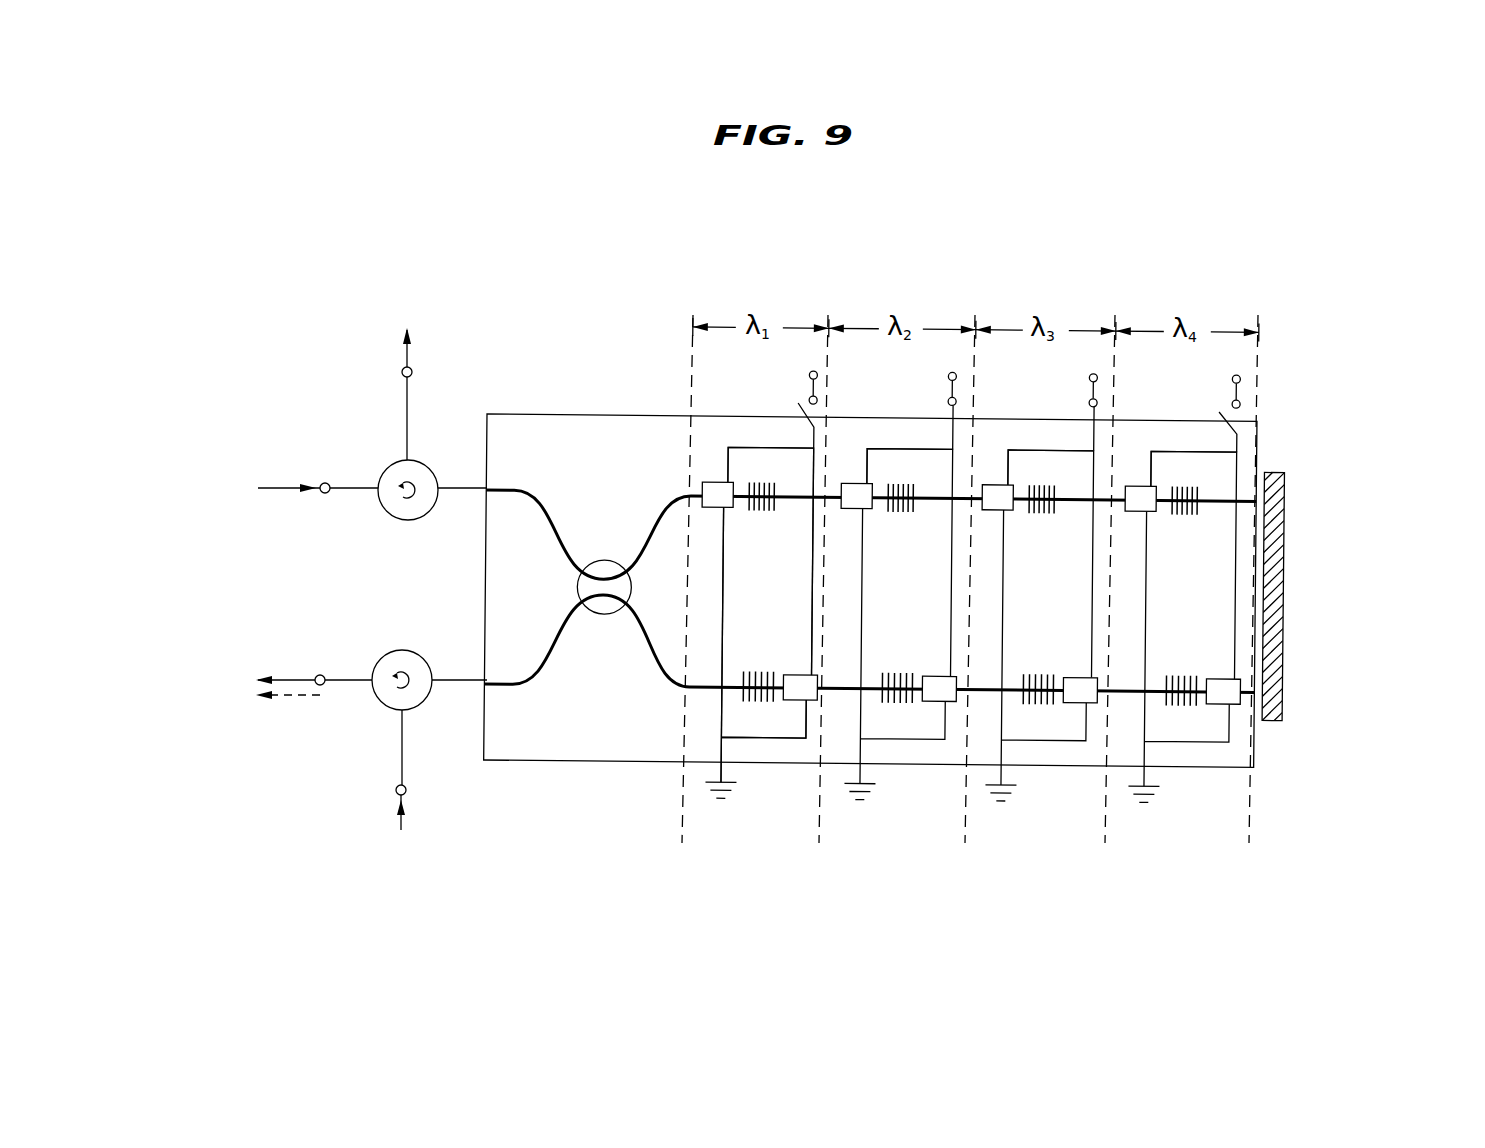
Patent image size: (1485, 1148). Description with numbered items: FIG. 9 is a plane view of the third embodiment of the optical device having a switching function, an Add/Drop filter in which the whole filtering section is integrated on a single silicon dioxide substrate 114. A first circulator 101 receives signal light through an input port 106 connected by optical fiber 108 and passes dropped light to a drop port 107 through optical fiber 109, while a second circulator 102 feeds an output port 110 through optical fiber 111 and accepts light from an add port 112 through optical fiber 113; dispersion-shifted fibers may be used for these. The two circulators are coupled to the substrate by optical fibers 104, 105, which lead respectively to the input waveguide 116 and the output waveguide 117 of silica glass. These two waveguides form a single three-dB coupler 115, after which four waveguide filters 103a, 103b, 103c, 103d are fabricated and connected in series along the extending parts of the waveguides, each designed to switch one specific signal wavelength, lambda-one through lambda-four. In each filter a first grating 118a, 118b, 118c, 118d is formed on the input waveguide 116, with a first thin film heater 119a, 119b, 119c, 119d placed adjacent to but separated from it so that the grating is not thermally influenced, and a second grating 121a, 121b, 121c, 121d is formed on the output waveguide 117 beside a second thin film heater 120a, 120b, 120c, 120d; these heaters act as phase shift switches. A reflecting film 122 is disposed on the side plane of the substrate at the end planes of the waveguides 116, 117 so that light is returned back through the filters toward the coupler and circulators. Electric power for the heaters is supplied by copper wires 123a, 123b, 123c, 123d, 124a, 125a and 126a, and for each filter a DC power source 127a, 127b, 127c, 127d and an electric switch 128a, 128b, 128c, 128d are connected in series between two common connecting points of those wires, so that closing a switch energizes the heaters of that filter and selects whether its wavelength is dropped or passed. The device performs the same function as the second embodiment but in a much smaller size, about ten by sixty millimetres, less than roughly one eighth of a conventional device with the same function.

The first circulator 101 is at (383, 503).
The second circulator 102 is at (380, 702).
The waveguide filter 103a is at (690, 762).
The waveguide filter 103b is at (888, 766).
The waveguide filter 103c is at (1027, 768).
The waveguide filter 103d is at (1172, 770).
The optical fiber 104 is at (457, 487).
The optical fiber 105 is at (449, 678).
The input port 106 is at (323, 483).
The drop port 107 is at (411, 372).
The optical fiber 108 is at (363, 486).
The optical fiber 109 is at (408, 427).
The output port 110 is at (320, 675).
The optical fiber 111 is at (355, 678).
The add port 112 is at (395, 795).
The optical fiber 113 is at (405, 752).
The SiO2 substrate 114 is at (583, 750).
The 3 dB coupler 115 is at (597, 560).
The input waveguide 116 is at (522, 480).
The output waveguide 117 is at (518, 690).
The first grating 118a is at (765, 512).
The first grating 118b is at (904, 512).
The first grating 118c is at (1047, 514).
The first grating 118d is at (1190, 515).
The first thin film heater 119a is at (712, 508).
The first thin film heater 119b is at (851, 508).
The first thin film heater 119c is at (990, 508).
The first thin film heater 119d is at (1133, 513).
The second thin film heater 120a is at (795, 673).
The second thin film heater 120b is at (934, 673).
The second thin film heater 120c is at (1075, 675).
The second thin film heater 120d is at (1219, 677).
The second grating 121a is at (755, 670).
The second grating 121b is at (894, 670).
The second grating 121c is at (1037, 672).
The second grating 121d is at (1180, 674).
The reflecting film 122 is at (1283, 606).
The copper wire 123a is at (738, 447).
The copper wire 123b is at (875, 447).
The copper wire 123c is at (1020, 449).
The copper wire 123d is at (1162, 451).
The copper wire 124a is at (812, 650).
The copper wire 125a is at (720, 715).
The copper wire 126a is at (780, 738).
The DC power source 127a is at (808, 374).
The DC power source 127b is at (947, 374).
The DC power source 127c is at (1091, 376).
The DC power source 127d is at (1233, 376).
The electric switch 128a is at (808, 400).
The electric switch 128b is at (947, 400).
The electric switch 128c is at (1090, 402).
The electric switch 128d is at (1233, 402).